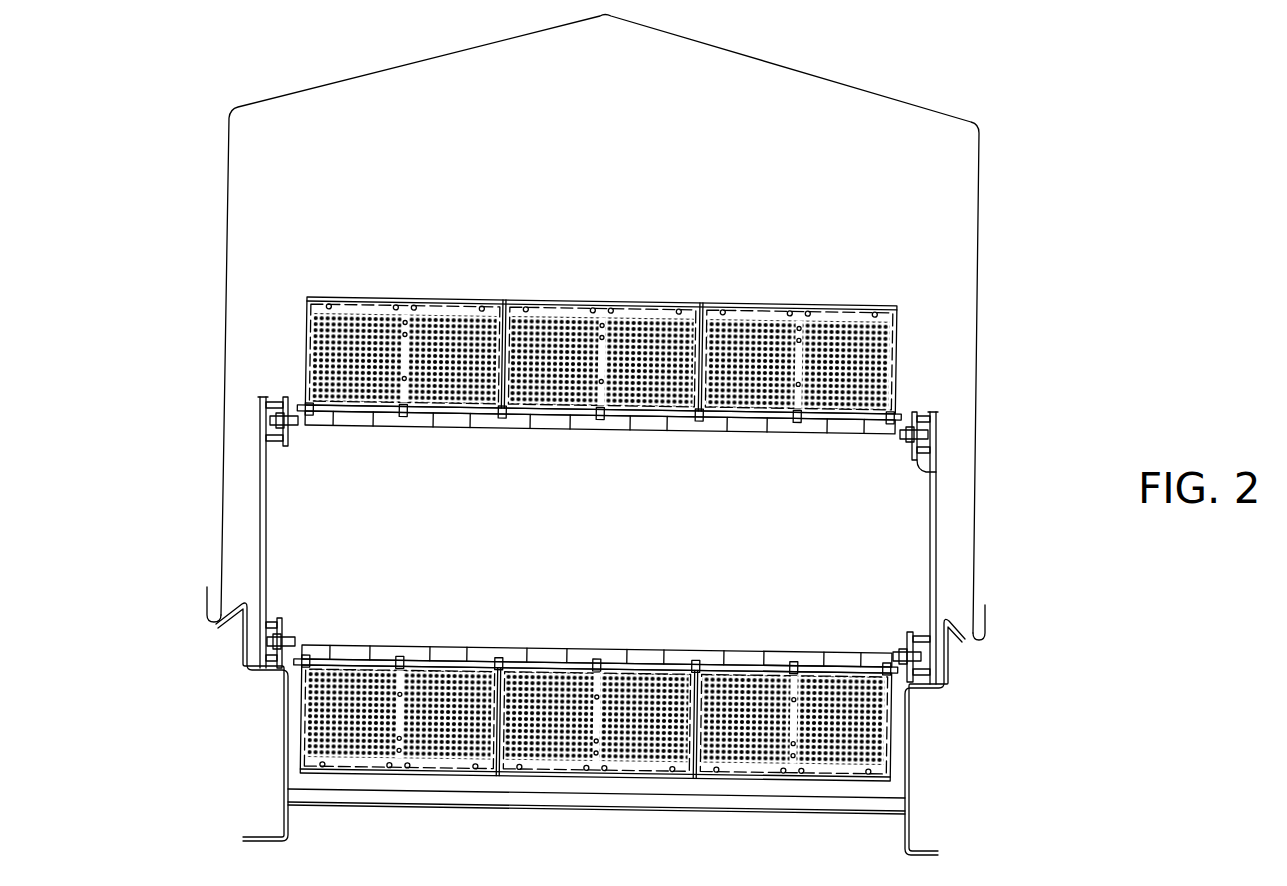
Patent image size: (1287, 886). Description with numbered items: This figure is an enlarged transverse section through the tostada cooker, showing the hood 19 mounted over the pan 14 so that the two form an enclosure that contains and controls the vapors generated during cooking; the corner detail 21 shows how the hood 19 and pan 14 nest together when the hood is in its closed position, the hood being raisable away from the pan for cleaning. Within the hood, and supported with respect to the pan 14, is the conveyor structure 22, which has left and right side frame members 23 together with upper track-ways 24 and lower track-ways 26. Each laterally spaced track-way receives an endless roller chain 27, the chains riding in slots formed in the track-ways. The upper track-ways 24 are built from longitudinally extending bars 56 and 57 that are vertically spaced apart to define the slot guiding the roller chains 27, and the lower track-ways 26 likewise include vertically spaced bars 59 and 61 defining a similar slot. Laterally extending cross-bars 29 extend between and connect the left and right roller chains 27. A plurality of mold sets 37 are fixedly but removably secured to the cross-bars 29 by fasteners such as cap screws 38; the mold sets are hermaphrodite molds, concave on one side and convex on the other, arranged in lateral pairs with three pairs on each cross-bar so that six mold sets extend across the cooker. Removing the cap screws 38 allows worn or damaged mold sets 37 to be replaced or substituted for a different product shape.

The pan 14 is at (293, 772).
The hood 19 is at (983, 356).
The corner detail 21 is at (980, 606).
The conveyor structure 22 is at (598, 306).
The side frame members 23 is at (268, 518).
The upper track-ways 24 is at (283, 397).
The lower track-ways 26 is at (271, 627).
The endless roller chain 27 is at (291, 432).
The cross-bars 29 is at (523, 418).
The mold sets 37 is at (397, 312).
The cap screws 38 is at (697, 421).
The longitudinally extending bar 56 is at (913, 406).
The longitudinally extending bar 57 is at (924, 476).
The longitudinally extending bar 59 is at (908, 633).
The longitudinally extending bar 61 is at (906, 698).